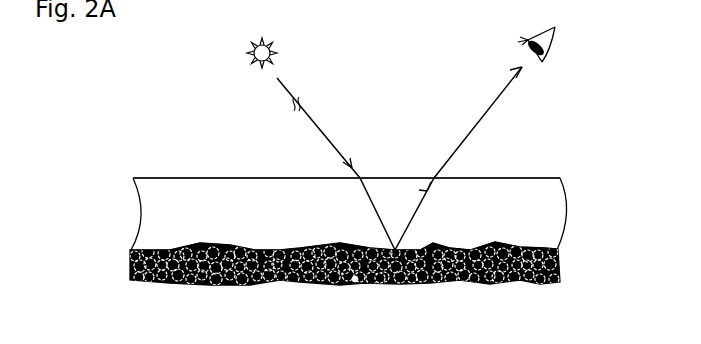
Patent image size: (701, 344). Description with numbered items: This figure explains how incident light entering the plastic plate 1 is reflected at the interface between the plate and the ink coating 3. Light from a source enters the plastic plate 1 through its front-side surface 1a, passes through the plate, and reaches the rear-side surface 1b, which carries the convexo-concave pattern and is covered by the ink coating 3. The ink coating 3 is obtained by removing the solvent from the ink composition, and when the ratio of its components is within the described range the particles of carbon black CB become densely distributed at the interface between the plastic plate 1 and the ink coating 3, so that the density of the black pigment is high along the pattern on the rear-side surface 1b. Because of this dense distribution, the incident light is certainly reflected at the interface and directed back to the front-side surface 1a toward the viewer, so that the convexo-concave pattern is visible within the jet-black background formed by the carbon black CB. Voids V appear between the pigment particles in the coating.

The plastic plate 1 is at (546, 219).
The front-side surface 1a is at (145, 178).
The rear-side surface 1b is at (162, 248).
The ink coating 3 is at (561, 258).
The void V is at (355, 285).
The carbon black CB is at (380, 285).